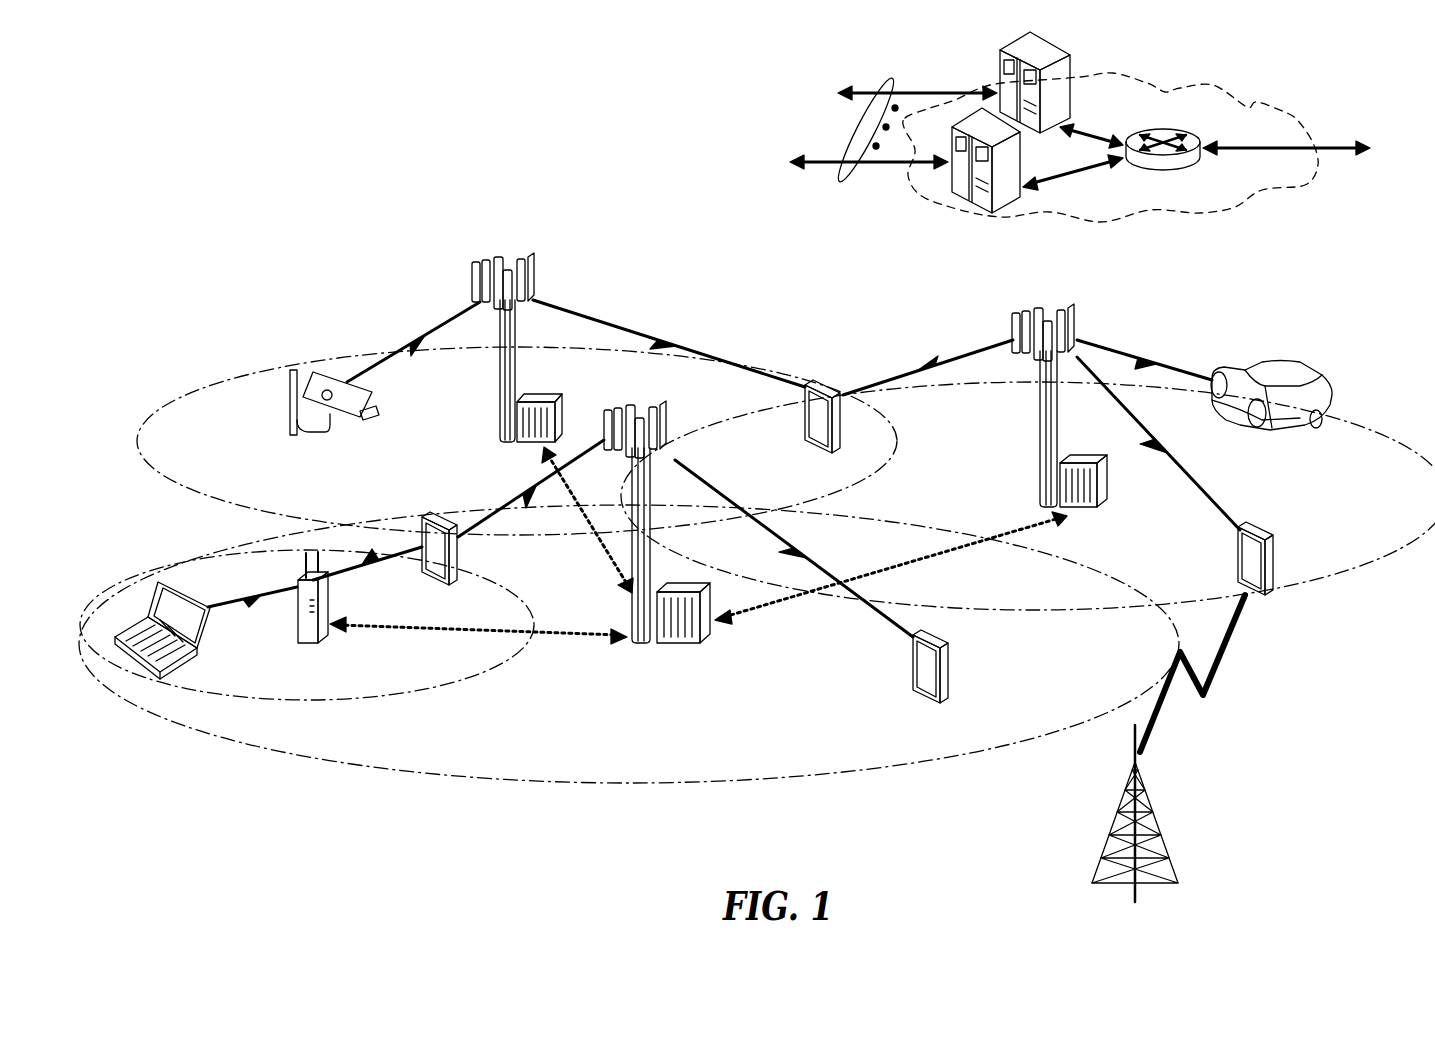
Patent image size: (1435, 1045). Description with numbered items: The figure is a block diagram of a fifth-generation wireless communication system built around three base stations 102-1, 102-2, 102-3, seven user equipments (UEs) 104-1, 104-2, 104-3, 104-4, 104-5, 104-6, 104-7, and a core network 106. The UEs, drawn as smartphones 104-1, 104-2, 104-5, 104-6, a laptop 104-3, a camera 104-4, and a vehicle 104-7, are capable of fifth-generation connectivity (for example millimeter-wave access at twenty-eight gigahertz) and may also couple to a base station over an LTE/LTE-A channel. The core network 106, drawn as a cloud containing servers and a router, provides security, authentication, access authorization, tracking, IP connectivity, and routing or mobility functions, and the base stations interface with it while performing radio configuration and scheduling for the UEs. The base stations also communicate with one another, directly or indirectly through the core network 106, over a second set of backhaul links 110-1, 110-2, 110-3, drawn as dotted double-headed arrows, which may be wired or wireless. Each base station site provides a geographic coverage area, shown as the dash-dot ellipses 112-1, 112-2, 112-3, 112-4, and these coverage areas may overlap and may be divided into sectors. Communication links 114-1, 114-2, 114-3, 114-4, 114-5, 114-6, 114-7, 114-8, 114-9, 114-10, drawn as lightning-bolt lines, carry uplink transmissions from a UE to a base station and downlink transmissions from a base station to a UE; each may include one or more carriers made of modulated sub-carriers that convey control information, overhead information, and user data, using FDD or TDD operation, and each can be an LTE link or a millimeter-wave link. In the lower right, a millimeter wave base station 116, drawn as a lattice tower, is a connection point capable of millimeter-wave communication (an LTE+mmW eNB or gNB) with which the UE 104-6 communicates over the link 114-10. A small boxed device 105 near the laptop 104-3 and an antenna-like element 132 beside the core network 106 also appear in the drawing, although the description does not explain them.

The base station 102-1 is at (640, 645).
The base station 102-2 is at (500, 385).
The base station 102-3 is at (1040, 425).
The UE 104-1 is at (952, 680).
The UE 104-2 is at (458, 562).
The UE 104-3 is at (132, 676).
The UE 104-4 is at (318, 434).
The UE 104-5 is at (803, 432).
The UE 104-6 is at (1274, 548).
The UE 104-7 is at (1298, 372).
The access point / relay device 105 is at (300, 627).
The core network 106 is at (1195, 217).
The backhaul link 110-1 is at (372, 636).
The backhaul link 110-2 is at (1000, 548).
The backhaul link 110-3 is at (600, 548).
The coverage area 112-1 is at (565, 787).
The coverage area 112-2 is at (440, 690).
The coverage area 112-3 is at (205, 497).
The coverage area 112-4 is at (1405, 412).
The communication link 114-1 is at (800, 547).
The communication link 114-2 is at (515, 495).
The communication link 114-3 is at (220, 600).
The communication link 114-4 is at (372, 570).
The communication link 114-5 is at (415, 332).
The communication link 114-6 is at (678, 342).
The communication link 114-7 is at (925, 362).
The communication link 114-8 is at (1168, 470).
The communication link 114-9 is at (1143, 350).
The communication link 114-10 is at (1212, 682).
The millimeter wave base station 116 is at (1148, 790).
The satellite / antenna 132 is at (850, 183).